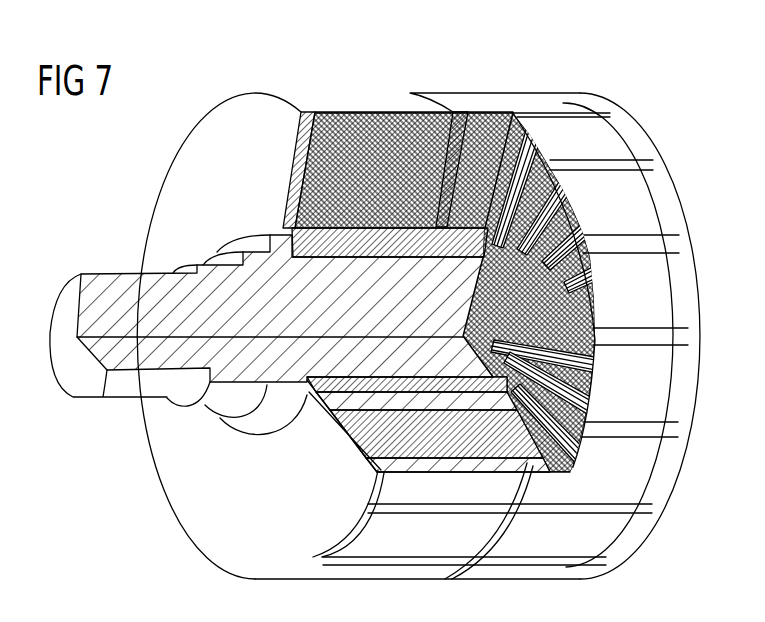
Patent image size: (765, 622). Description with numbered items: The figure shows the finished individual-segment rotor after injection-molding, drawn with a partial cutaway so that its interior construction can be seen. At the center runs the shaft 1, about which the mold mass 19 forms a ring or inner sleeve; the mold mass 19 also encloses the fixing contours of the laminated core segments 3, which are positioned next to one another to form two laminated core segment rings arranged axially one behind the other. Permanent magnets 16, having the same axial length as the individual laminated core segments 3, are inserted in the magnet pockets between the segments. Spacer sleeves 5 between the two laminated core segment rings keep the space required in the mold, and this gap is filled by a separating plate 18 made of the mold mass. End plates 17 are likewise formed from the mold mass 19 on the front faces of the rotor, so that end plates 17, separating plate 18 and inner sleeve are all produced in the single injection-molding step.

The shaft 1 is at (73, 288).
The laminated core segments 3 is at (623, 133).
The spacer sleeves 5 is at (518, 470).
The permanent magnets 16 is at (395, 128).
The end plates 17 is at (188, 160).
The separating plate 18 is at (459, 112).
The mold mass 19 is at (293, 233).